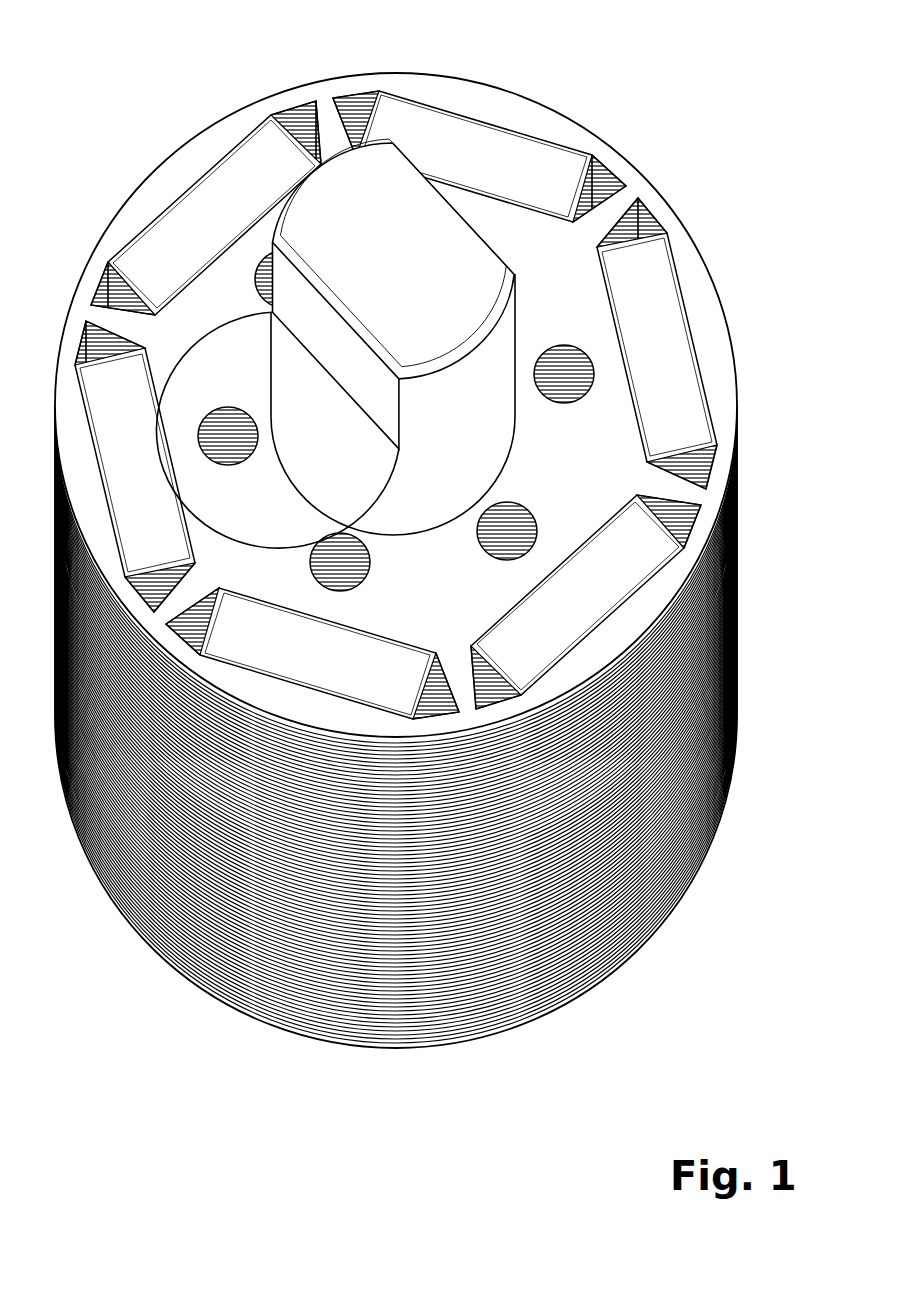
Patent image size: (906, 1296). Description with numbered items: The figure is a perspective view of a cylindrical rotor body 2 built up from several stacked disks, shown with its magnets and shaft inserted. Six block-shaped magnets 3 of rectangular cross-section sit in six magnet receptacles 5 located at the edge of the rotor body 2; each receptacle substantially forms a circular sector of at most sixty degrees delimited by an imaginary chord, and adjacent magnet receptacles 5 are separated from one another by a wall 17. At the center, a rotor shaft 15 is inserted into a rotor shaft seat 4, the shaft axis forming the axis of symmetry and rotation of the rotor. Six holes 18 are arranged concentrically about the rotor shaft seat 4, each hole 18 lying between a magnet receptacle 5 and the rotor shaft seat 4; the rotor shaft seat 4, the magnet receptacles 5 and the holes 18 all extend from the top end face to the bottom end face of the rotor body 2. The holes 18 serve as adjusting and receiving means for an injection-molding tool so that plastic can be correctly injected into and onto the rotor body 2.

The rotor body 2 is at (350, 1030).
The magnet 3 is at (396, 372).
The rotor shaft seat 4 is at (396, 378).
The magnet receptacle 5 is at (441, 88).
The rotor shaft 15 is at (478, 258).
The wall 17 is at (640, 205).
The hole 18 is at (350, 571).